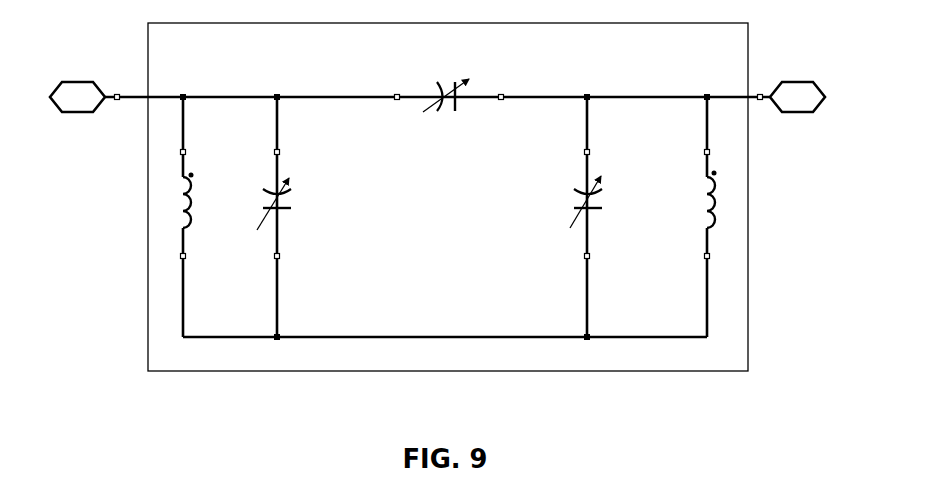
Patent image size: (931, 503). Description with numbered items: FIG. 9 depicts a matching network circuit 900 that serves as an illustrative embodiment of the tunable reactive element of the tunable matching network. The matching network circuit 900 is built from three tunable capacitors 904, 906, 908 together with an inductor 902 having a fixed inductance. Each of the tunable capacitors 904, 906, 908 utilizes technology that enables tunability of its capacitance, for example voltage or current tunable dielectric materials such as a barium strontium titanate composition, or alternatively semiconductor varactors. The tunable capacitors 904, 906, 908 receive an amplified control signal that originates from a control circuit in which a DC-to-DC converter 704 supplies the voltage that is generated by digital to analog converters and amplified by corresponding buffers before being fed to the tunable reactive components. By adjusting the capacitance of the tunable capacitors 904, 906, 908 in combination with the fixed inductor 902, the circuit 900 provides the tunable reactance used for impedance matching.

The DC-to-DC converter 704 is at (733, 53).
The matching network circuit 900 is at (444, 218).
The inductor 902 is at (189, 203).
The tunable capacitor 904 is at (287, 210).
The tunable capacitor 906 is at (457, 107).
The tunable capacitor 908 is at (598, 210).